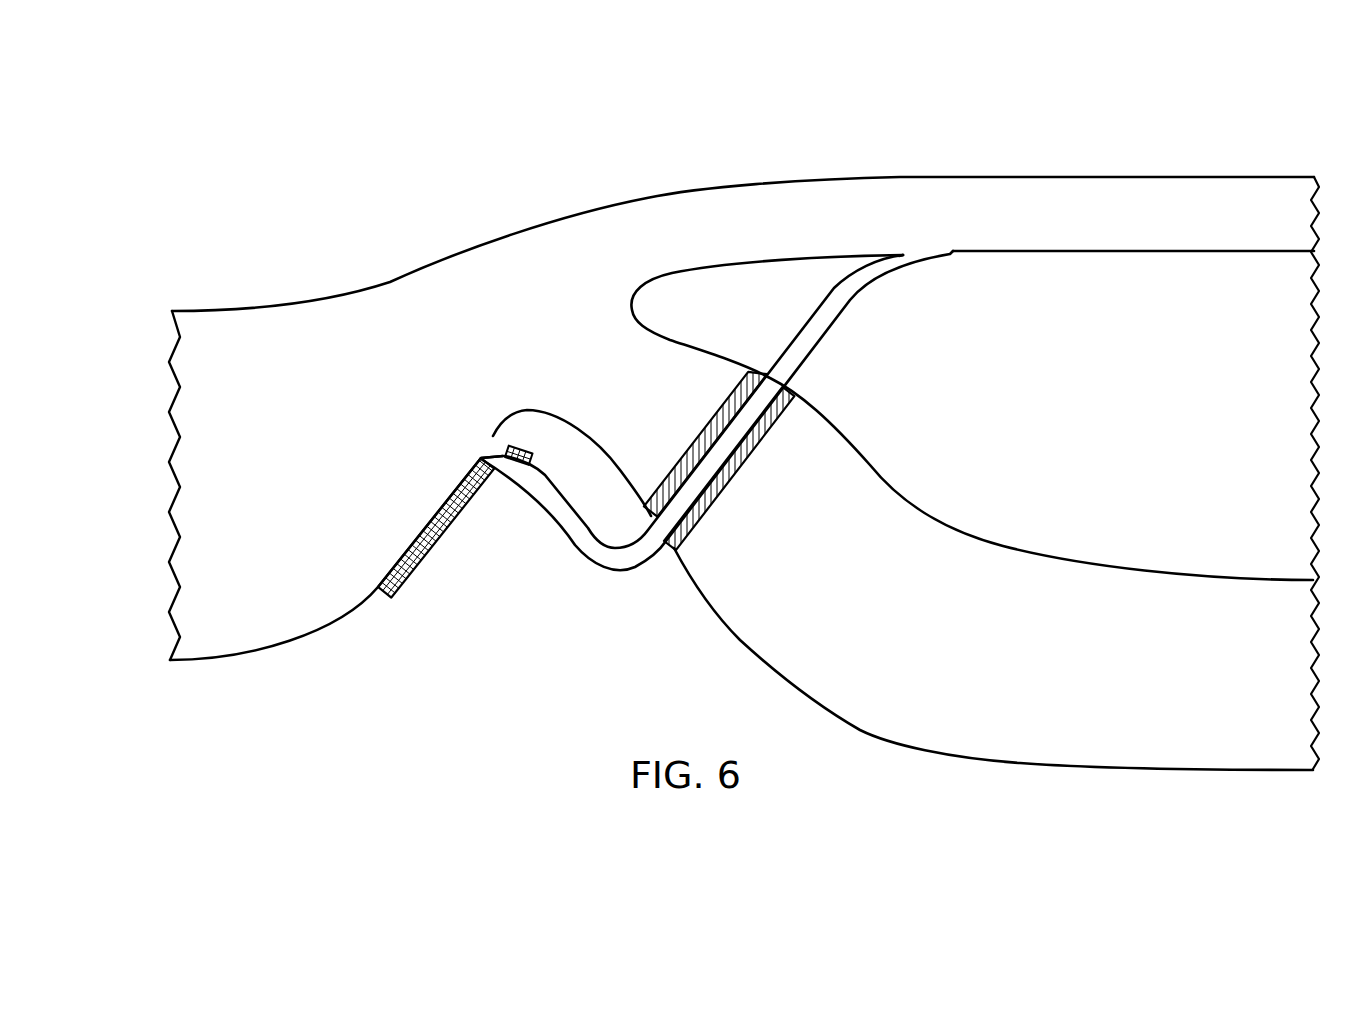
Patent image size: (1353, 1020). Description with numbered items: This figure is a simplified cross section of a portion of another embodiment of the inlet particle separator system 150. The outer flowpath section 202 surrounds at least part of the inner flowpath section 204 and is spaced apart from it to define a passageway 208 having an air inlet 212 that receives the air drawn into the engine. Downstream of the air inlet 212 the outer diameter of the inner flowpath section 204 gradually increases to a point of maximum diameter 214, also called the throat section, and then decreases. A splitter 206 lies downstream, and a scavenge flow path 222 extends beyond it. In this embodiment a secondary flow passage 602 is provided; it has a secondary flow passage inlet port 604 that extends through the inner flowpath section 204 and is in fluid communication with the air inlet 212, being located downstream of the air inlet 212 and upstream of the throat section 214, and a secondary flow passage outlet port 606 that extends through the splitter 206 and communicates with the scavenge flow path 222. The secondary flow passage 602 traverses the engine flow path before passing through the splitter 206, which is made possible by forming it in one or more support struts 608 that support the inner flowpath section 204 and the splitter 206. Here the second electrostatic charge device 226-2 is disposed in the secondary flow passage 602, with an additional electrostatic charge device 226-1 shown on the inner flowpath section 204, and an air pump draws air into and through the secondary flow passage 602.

The inlet particle separator system 150 is at (889, 414).
The outer flowpath section 202 is at (390, 282).
The inner flowpath section 204 is at (313, 641).
The splitter 206 is at (633, 320).
The passageway 208 is at (288, 481).
The air inlet 212 is at (157, 509).
The point of maximum diameter 214 is at (543, 410).
The scavenge flow path 222 is at (1068, 223).
The first bonding pad 226-1 is at (415, 575).
The second electrostatic charge device 226-2 is at (515, 470).
The secondary flow passage 602 is at (717, 462).
The secondary flow passage inlet port 604 is at (493, 445).
The secondary flow passage outlet port 606 is at (919, 256).
The support struts 608 is at (733, 478).